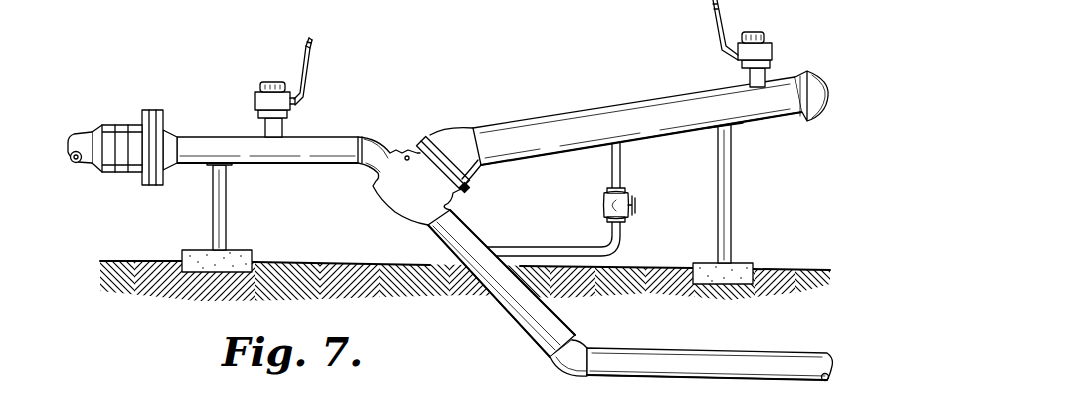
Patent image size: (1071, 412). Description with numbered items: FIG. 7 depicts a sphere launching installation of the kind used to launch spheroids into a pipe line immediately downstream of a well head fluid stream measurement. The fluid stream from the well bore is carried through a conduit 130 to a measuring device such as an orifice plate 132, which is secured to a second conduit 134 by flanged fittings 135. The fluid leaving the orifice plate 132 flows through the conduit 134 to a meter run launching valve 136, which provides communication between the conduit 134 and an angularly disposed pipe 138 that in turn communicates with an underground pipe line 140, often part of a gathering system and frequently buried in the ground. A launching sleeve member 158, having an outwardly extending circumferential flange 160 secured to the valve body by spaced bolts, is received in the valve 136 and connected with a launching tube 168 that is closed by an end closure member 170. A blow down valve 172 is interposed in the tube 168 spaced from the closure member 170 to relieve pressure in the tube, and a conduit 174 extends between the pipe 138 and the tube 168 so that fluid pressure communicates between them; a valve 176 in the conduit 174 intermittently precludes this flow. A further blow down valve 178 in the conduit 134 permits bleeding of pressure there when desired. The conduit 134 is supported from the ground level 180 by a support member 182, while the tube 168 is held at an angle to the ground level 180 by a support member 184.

The conduit 130 is at (76, 131).
The orifice plate 132 is at (115, 125).
The second conduit 134 is at (187, 145).
The flanged fittings 135 is at (153, 112).
The meter run launching valve 136 is at (391, 165).
The angularly disposed pipe 138 is at (515, 322).
The underground pipe line 140 is at (653, 357).
The launching sleeve member 158 is at (437, 147).
The circumferential flange 160 is at (469, 187).
The launching tube 168 is at (612, 117).
The end closure member 170 is at (808, 116).
The blow down valve 172 is at (771, 46).
The conduit 174 is at (621, 160).
The valve 176 is at (604, 198).
The blow down valve 178 is at (260, 98).
The ground level 180 is at (290, 262).
The support member 182 is at (227, 200).
The support member 184 is at (730, 193).